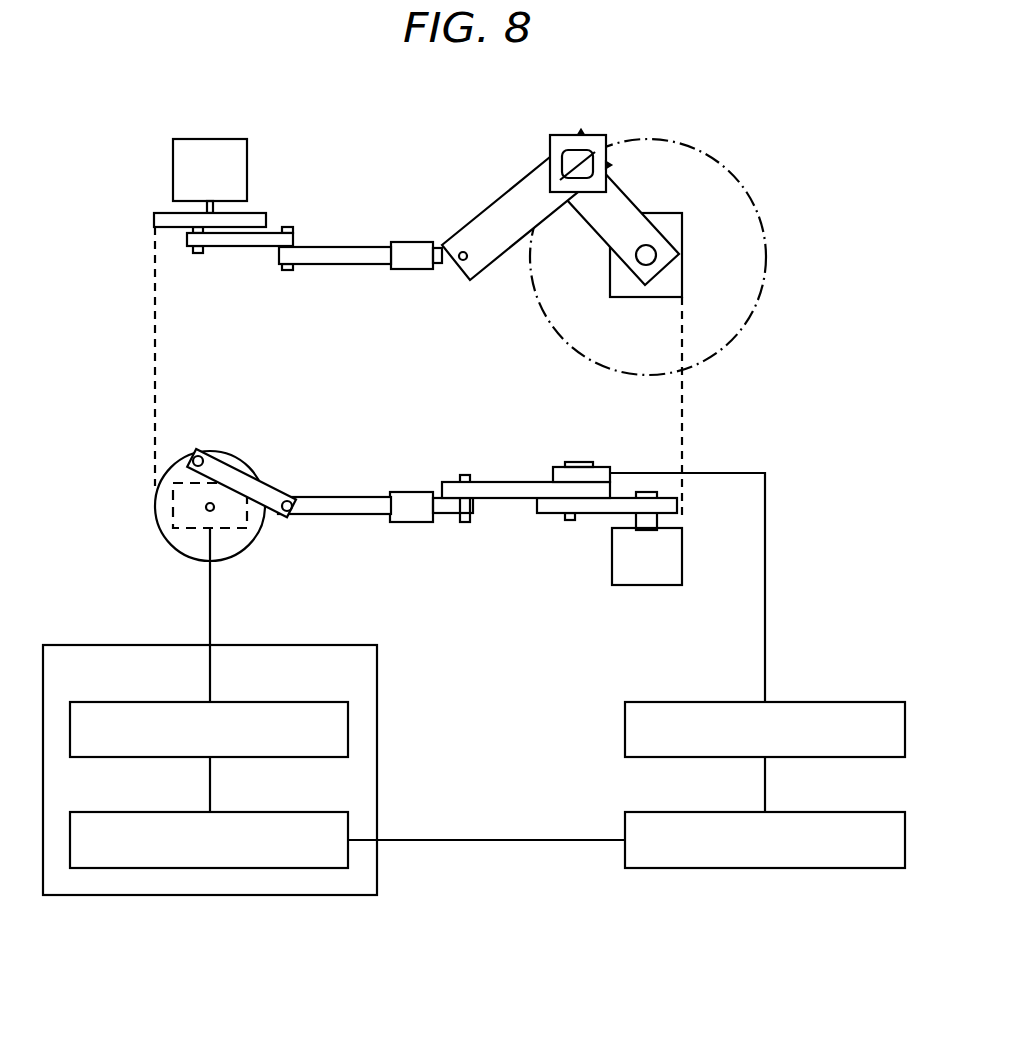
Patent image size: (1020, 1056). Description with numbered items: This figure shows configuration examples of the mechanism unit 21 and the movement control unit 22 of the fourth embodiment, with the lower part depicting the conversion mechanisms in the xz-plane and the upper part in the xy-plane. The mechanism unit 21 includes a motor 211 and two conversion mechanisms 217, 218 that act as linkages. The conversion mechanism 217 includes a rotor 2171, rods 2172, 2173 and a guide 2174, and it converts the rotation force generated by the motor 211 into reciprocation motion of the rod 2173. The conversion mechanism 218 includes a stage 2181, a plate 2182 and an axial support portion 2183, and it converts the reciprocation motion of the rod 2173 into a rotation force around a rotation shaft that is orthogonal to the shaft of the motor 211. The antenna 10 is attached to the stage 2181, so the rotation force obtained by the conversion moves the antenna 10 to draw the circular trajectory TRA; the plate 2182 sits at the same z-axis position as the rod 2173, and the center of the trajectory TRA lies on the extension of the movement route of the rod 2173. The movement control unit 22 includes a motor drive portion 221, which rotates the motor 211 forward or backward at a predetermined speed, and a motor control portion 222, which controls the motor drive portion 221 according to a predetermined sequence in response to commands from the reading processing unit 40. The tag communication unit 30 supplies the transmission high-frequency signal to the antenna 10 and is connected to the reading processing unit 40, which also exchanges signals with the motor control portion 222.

The antenna 10 is at (602, 130).
The mechanism unit 21 is at (148, 570).
The movement control unit 22 is at (300, 645).
The tag communication unit 30 is at (823, 701).
The reading processing unit 40 is at (823, 811).
The motor 211 is at (247, 163).
The conversion mechanism 217 is at (354, 419).
The conversion mechanism 218 is at (497, 573).
The motor drive portion 221 is at (270, 701).
The motor control portion 222 is at (270, 811).
The rotor 2171 is at (153, 220).
The rod 2172 is at (223, 250).
The rod 2173 is at (322, 248).
The guide 2174 is at (421, 270).
The stage 2181 is at (492, 200).
The plate 2182 is at (627, 197).
The axial support portion 2183 is at (653, 298).
The circular trajectory TRA is at (765, 256).